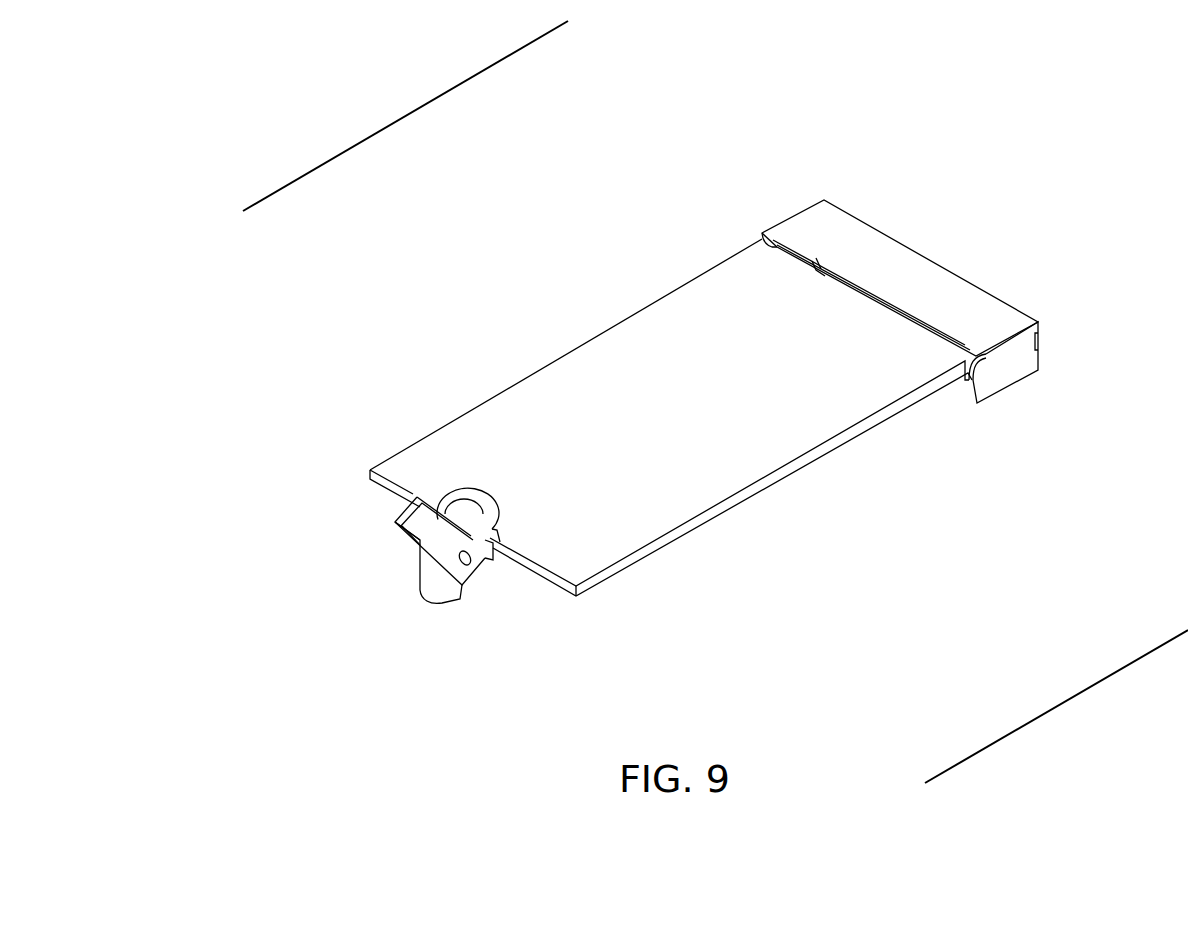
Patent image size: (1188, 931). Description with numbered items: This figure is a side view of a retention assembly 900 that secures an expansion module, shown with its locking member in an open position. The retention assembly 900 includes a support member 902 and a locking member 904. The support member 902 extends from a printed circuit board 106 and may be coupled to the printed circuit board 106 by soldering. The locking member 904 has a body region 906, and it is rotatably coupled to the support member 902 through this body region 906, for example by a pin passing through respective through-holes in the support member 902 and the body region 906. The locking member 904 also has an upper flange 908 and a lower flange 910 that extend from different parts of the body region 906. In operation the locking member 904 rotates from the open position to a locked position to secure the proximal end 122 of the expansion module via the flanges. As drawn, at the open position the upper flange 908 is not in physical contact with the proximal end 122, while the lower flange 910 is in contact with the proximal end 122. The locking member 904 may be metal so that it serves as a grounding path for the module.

The printed circuit board 106 is at (443, 94).
The proximal end 122 is at (518, 533).
The retention assembly 900 is at (417, 575).
The support member 902 is at (433, 605).
The locking member 904 is at (380, 505).
The body region 906 is at (417, 549).
The upper flange 908 is at (467, 490).
The lower flange 910 is at (490, 543).